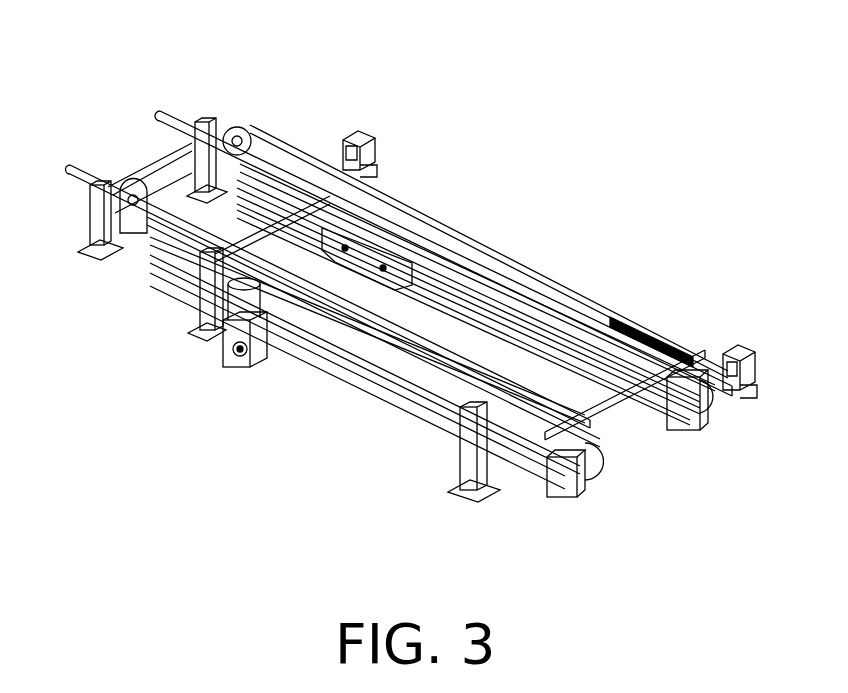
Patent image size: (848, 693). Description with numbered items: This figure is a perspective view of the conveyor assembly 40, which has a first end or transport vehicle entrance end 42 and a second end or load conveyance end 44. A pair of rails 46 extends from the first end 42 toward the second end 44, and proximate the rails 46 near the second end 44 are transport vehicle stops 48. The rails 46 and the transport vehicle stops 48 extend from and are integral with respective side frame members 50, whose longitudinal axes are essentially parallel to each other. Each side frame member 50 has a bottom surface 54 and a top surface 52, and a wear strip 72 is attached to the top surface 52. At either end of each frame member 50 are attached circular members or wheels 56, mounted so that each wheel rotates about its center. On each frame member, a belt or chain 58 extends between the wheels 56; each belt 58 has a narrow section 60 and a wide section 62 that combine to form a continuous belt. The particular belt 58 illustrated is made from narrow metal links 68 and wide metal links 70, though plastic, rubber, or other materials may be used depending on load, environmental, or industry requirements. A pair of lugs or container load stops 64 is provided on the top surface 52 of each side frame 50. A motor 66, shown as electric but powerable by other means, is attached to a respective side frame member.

The conveyor assembly 40 is at (478, 93).
The first end 42 is at (148, 157).
The second end 44 is at (658, 444).
The rails 46 is at (78, 168).
The transport vehicle stops 48 is at (600, 383).
The side frame members 50 is at (490, 300).
The top surface 52 is at (540, 325).
The bottom surface 54 is at (308, 205).
The wheels 56 is at (230, 127).
The belt 58 is at (386, 198).
The narrow section 60 is at (430, 225).
The wide section 62 is at (708, 402).
The container load stops 64 is at (240, 153).
The motor 66 is at (258, 368).
The narrow metal links 68 is at (660, 337).
The wide metal links 70 is at (677, 347).
The wear strip 72 is at (300, 160).